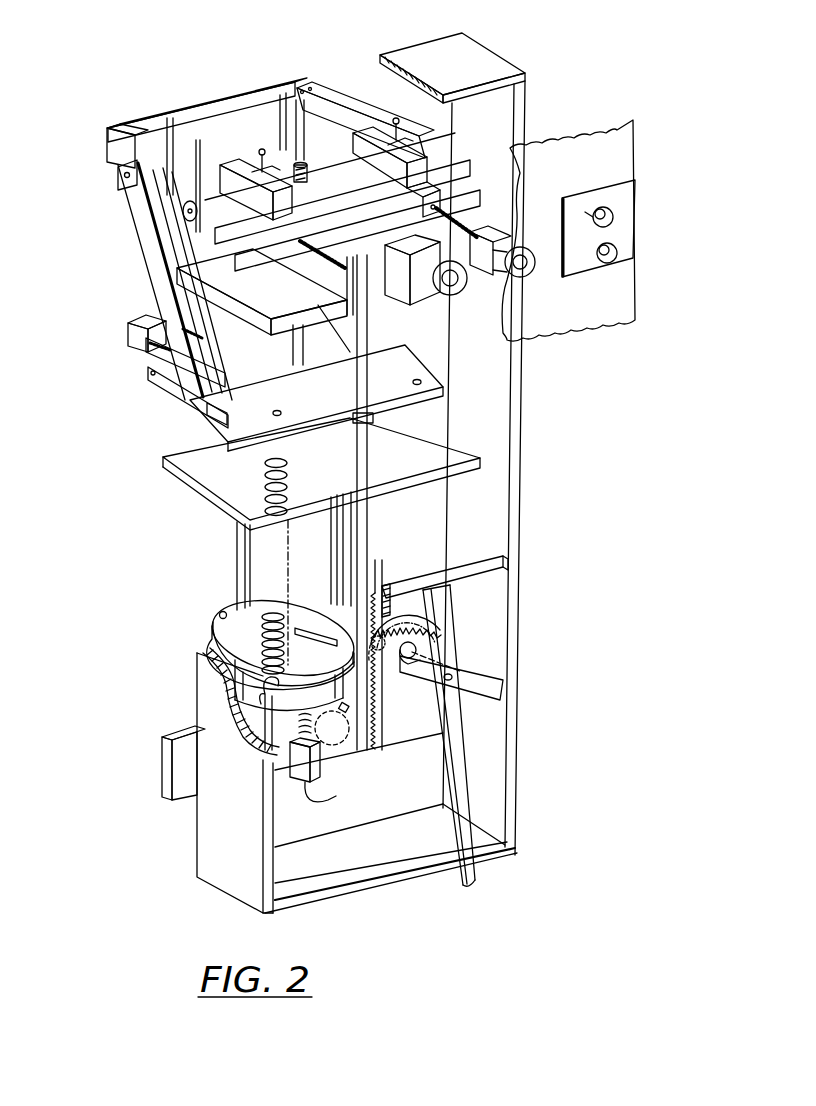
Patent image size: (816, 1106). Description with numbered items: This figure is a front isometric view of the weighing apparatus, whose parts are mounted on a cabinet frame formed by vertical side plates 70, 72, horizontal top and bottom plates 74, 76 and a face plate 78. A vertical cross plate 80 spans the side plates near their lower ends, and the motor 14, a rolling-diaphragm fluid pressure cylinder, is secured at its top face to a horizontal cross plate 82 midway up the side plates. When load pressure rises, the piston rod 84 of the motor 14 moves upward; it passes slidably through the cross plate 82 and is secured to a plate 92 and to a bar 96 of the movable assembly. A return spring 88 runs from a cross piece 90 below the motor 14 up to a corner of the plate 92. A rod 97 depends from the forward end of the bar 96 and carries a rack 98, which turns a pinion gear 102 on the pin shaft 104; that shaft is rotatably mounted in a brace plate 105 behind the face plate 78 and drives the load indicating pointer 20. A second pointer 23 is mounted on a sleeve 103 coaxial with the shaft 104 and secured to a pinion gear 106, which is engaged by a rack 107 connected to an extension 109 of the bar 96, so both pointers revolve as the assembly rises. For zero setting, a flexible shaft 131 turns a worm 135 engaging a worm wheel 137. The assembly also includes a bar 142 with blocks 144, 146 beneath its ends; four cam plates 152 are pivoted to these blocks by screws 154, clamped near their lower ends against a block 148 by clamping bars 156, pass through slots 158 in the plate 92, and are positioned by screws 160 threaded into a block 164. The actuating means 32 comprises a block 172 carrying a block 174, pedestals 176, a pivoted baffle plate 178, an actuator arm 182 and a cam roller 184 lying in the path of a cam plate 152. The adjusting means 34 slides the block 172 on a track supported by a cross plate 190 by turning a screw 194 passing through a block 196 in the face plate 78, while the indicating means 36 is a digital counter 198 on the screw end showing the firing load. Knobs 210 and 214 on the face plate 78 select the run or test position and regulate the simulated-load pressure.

The motor 14 is at (303, 584).
The load indicating pointer 20 is at (460, 771).
The second pointer 23 is at (493, 692).
The actuating means 32 is at (330, 70).
The adjusting means 34 is at (476, 217).
The indicating means 36 is at (459, 310).
The vertical side plate 70 is at (493, 411).
The vertical side plate 72 is at (238, 847).
The horizontal top plate 74 is at (463, 72).
The horizontal bottom plate 76 is at (393, 864).
The face plate 78 is at (572, 174).
The cross plate 80 is at (180, 737).
The cross plate 82 is at (418, 461).
The piston rod 84 is at (263, 345).
The motor return spring 88 is at (262, 473).
The cross piece 90 is at (262, 722).
The plate 92 is at (310, 417).
The bar 96 is at (372, 226).
The rod 97 is at (370, 511).
The rack 98 is at (372, 590).
The pinion gear 102 is at (372, 607).
The sleeve 103 is at (418, 646).
The pin shaft 104 is at (408, 612).
The brace plate 105 is at (495, 602).
The pinion gear 106 is at (412, 618).
The rack 107 is at (380, 722).
The extension 109 is at (355, 280).
The flexible shaft 131 is at (328, 800).
The worm 135 is at (280, 760).
The worm wheel 137 is at (338, 735).
The bar 142 is at (230, 102).
The block 144 is at (280, 95).
The block 146 is at (108, 152).
The block 148 is at (237, 427).
The cam plate 152 is at (170, 225).
The screw 154 is at (122, 175).
The clamping bar 156 is at (160, 387).
The slot 158 is at (342, 355).
The screw 160 is at (160, 347).
The block 164 is at (137, 320).
The block 172 is at (436, 194).
The block 174 is at (263, 207).
The pedestal 176 is at (294, 95).
The baffle plate 178 is at (183, 117).
The actuator arm 182 is at (190, 193).
The cam roller 184 is at (199, 218).
The cross plate 190 is at (230, 287).
The screw 194 is at (449, 220).
The block 196 is at (472, 243).
The digital counter 198 is at (530, 270).
The knob 210 is at (613, 215).
The knob 214 is at (617, 253).